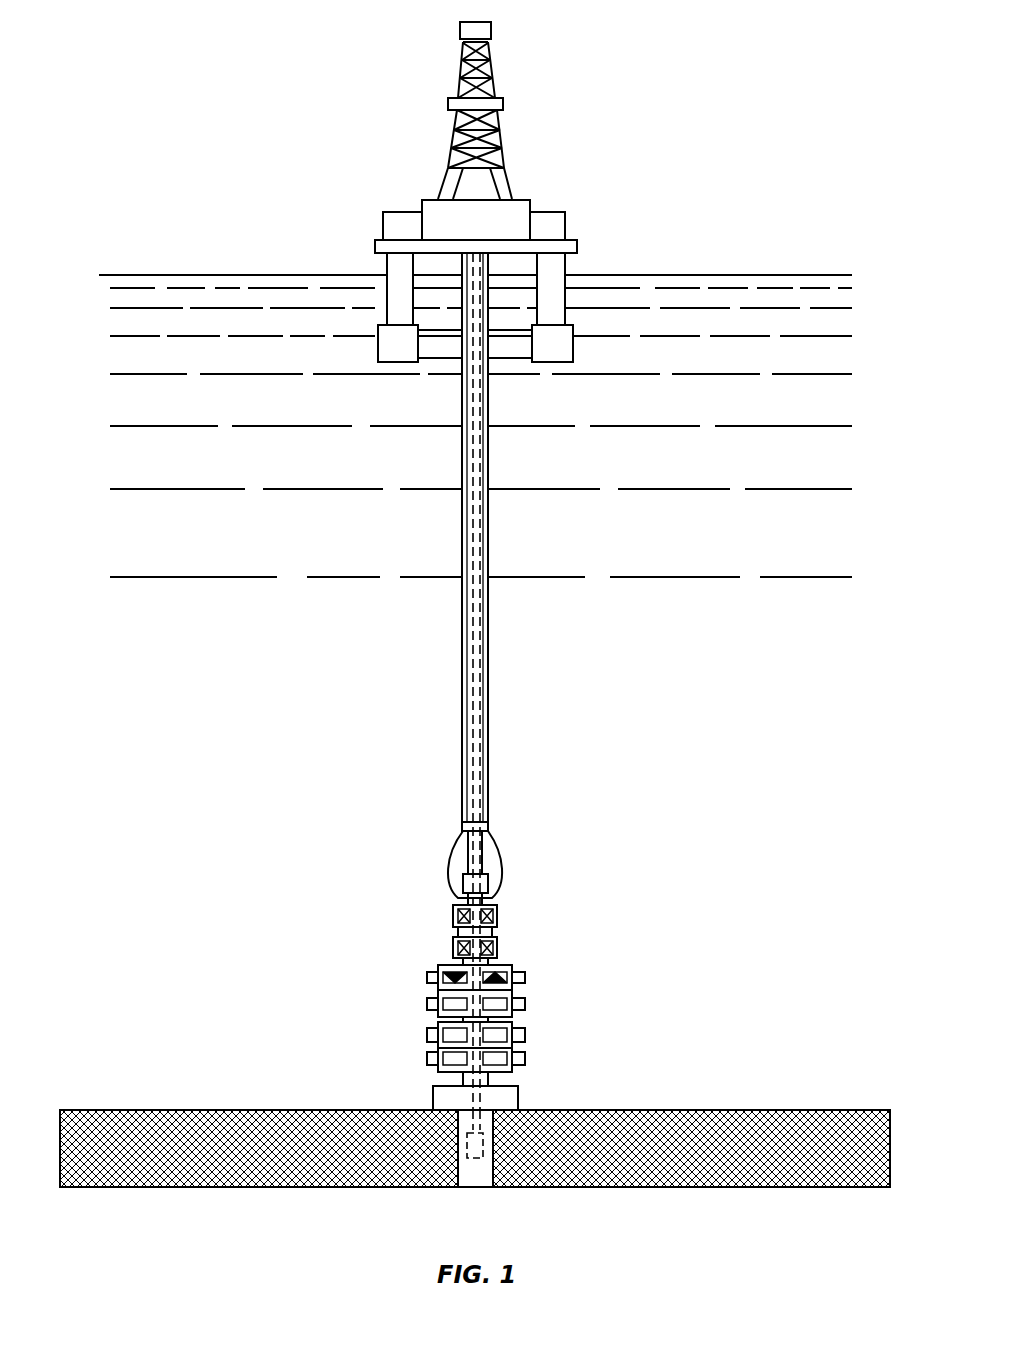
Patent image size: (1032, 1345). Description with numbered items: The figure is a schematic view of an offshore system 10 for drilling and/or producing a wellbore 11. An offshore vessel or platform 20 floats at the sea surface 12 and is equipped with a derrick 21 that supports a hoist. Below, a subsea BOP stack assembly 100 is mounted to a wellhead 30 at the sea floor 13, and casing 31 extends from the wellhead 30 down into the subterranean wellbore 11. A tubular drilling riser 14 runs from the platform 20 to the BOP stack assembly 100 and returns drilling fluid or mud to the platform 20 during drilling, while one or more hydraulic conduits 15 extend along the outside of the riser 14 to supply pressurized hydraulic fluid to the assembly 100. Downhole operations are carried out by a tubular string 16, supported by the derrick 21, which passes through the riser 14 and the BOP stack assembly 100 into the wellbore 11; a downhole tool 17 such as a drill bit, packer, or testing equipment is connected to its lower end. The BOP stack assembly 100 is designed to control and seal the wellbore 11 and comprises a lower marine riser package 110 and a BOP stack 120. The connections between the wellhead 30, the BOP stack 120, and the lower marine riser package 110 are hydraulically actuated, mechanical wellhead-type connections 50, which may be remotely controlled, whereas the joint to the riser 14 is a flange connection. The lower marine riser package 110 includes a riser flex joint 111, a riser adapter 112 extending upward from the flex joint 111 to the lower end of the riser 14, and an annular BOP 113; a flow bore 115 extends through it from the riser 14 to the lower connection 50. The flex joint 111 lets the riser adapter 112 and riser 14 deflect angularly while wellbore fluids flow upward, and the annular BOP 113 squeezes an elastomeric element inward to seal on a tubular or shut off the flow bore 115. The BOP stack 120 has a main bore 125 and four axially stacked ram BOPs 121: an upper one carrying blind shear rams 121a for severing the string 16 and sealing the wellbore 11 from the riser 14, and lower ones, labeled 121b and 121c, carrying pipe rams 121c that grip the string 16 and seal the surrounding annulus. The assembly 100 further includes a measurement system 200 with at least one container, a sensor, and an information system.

The offshore system 10 is at (736, 162).
The wellbore 11 is at (456, 1142).
The sea surface 12 is at (765, 272).
The sea floor 13 is at (808, 1110).
The tubular drilling riser 14 is at (483, 538).
The hydraulic conduit 15 is at (490, 472).
The tubular string 16 is at (480, 710).
The downhole tool 17 is at (471, 1160).
The offshore vessel or platform 20 is at (523, 200).
The derrick 21 is at (490, 83).
The wellhead 30 is at (520, 1096).
The casing 31 is at (486, 1177).
The hydraulically actuated mechanical wellhead-type connection 50 is at (493, 930).
The subsea BOP stack assembly 100 is at (296, 968).
The lower marine riser package 110 is at (495, 989).
The riser flex joint 111 is at (492, 880).
The riser adapter 112 is at (485, 852).
The annular BOP 113 is at (453, 950).
The flow bore 115 is at (458, 887).
The BOP stack 120 is at (487, 1012).
The ram BOP 121 is at (525, 1012).
The blind shear rams 121a is at (525, 979).
The ram preventer 121b is at (529, 1004).
The pipe rams 121c is at (529, 1060).
The main bore 125 is at (461, 981).
The measurement system 200 is at (621, 839).